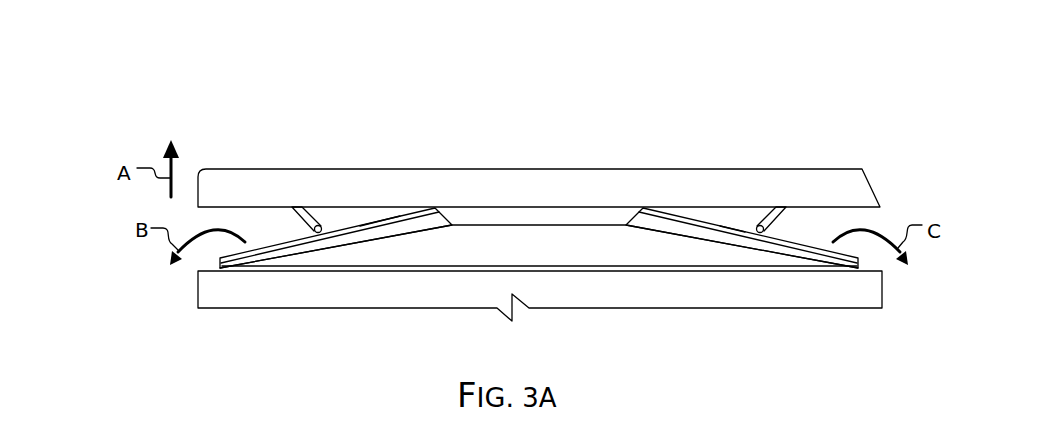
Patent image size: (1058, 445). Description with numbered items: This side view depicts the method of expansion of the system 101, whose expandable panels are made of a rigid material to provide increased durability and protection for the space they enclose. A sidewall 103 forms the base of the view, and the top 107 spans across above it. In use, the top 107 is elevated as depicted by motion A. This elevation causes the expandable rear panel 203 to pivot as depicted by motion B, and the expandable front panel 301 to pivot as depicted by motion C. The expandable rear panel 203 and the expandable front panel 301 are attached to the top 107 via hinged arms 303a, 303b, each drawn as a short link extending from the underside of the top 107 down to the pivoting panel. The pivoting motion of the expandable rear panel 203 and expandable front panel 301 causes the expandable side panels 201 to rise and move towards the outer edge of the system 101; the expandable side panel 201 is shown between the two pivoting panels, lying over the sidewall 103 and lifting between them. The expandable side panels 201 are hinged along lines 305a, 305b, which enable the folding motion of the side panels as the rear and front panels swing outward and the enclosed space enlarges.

The system 101 is at (123, 54).
The sidewall 103 is at (312, 308).
The top 107 is at (828, 169).
The expandable side panel 201 is at (528, 225).
The expandable rear panel 203 is at (381, 221).
The expandable front panel 301 is at (735, 225).
The hinged arm 303a is at (311, 207).
The hinged arm 303b is at (771, 207).
The hinge line 305a is at (366, 242).
The hinge line 305b is at (715, 242).